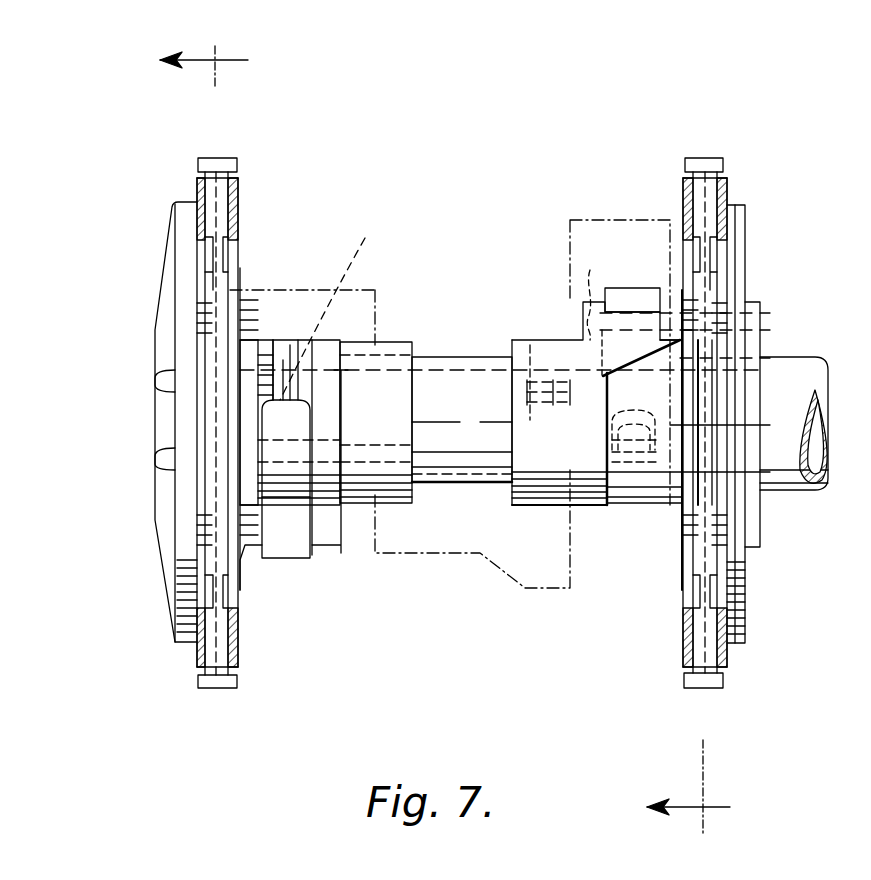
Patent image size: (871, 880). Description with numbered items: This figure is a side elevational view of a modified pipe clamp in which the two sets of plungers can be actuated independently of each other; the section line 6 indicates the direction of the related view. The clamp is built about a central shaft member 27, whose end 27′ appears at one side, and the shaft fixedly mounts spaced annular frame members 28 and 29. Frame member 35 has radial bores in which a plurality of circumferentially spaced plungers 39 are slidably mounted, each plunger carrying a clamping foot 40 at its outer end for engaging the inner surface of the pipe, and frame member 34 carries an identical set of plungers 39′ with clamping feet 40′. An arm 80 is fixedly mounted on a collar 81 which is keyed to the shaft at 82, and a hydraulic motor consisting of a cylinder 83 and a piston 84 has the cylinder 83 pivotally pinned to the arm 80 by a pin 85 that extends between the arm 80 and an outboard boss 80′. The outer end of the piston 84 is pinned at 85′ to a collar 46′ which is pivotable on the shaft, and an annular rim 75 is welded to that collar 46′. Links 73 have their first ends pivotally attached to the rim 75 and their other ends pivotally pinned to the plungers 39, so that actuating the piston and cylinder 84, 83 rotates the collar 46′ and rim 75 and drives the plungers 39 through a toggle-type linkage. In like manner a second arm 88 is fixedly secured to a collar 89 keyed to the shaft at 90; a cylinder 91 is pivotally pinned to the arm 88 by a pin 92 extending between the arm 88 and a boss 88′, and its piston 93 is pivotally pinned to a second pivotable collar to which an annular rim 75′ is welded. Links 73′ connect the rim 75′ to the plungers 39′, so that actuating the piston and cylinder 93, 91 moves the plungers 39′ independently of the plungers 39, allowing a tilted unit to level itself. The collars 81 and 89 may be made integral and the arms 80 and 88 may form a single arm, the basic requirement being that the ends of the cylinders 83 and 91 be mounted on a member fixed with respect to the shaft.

The section line 6- 6 is at (445, 444).
The central shaft member 27 is at (455, 480).
The shaft end 27′ is at (815, 390).
The annular frame member 28 is at (740, 570).
The annular frame member 29 is at (175, 407).
The frame member 34 is at (683, 200).
The frame member 35 is at (238, 216).
The plungers 39 is at (222, 186).
The plungers 39′ is at (710, 186).
The clamping foot 40 is at (213, 157).
The clamping foot 40′ is at (705, 157).
The collar 46′ is at (245, 350).
The links 73 is at (223, 275).
The links 73′ is at (712, 280).
The annular rim 75 is at (240, 302).
The annular rim 75′ is at (750, 330).
The arm 80 is at (310, 540).
The outboard boss 80′ is at (262, 565).
The collar 81 is at (388, 340).
The key 82 is at (395, 418).
The cylinder 83 is at (280, 425).
The piston 84 is at (332, 340).
The pin 85 is at (378, 530).
The pin 85′ is at (322, 319).
The second arm 88 is at (558, 340).
The boss 88′ is at (720, 340).
The collar 89 is at (545, 505).
The key 90 is at (530, 330).
The cylinder 91 is at (640, 285).
The pin 92 is at (583, 313).
The piston 93 is at (600, 452).